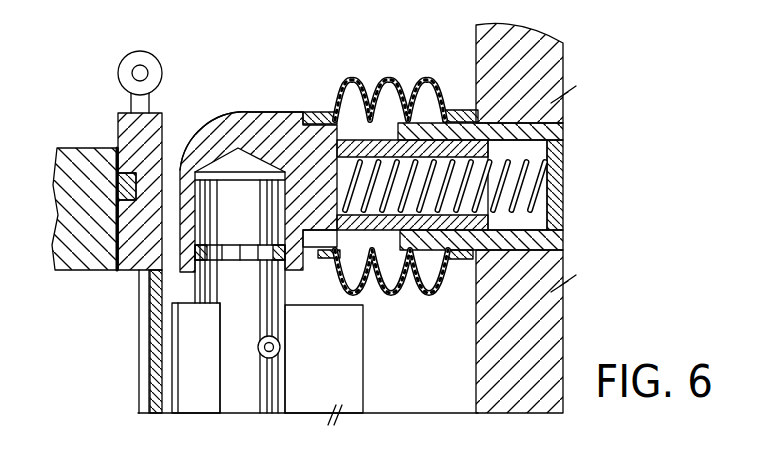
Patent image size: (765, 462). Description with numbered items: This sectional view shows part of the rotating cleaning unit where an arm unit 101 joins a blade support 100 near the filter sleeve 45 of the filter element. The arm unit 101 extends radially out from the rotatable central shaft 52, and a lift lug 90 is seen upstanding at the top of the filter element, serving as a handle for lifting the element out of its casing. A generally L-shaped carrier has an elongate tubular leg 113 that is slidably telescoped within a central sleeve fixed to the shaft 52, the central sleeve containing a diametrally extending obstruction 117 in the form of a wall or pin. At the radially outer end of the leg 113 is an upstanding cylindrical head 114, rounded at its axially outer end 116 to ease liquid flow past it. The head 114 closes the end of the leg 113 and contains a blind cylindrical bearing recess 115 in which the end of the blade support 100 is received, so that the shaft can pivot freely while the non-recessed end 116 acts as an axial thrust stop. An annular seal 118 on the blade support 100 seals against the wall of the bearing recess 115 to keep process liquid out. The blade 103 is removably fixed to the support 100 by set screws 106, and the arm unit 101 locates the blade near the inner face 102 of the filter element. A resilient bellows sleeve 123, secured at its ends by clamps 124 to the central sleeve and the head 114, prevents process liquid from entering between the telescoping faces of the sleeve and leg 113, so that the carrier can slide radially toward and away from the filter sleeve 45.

The filter sleeve 45 is at (133, 387).
The shaft 52 is at (558, 63).
The lift lug 90 is at (118, 73).
The blade support 100 is at (267, 403).
The arm unit 101 is at (352, 80).
The inner face 102 is at (180, 393).
The blade 103 is at (213, 393).
The set screw 106 is at (281, 347).
The tubular leg 113 is at (370, 155).
The cylindrical head 114 is at (215, 137).
The bearing recess 115 is at (285, 197).
The axially outer end 116 is at (236, 110).
The obstruction 117 is at (563, 155).
The annular seal 118 is at (195, 252).
The bellows sleeve 123 is at (418, 85).
The clamp 124 is at (448, 100).